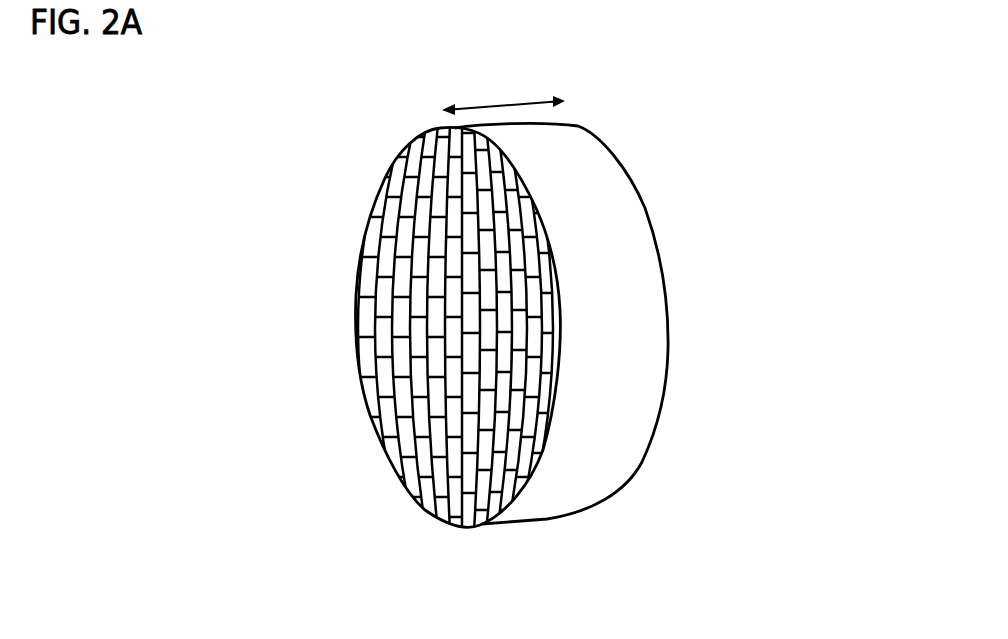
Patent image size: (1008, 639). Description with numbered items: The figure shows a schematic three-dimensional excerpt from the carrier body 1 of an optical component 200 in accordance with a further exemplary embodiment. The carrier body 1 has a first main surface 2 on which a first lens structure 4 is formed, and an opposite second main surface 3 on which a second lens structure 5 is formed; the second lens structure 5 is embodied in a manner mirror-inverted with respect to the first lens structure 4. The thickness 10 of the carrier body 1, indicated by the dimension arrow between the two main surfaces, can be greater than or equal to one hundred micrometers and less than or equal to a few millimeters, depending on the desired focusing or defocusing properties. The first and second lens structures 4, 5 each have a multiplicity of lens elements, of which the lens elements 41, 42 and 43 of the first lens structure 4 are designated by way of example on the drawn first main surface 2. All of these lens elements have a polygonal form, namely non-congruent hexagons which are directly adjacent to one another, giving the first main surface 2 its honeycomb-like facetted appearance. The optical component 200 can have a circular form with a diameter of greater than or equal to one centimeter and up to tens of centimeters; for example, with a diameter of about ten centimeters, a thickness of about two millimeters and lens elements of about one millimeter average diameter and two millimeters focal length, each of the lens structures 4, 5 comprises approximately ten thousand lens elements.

The optical component 200 is at (318, 72).
The thickness 10 is at (492, 108).
The carrier body 1 is at (553, 143).
The first main surface 2 is at (374, 329).
The first lens structure 4 is at (365, 384).
The second main surface 3 is at (654, 323).
The second lens structure 5 is at (668, 402).
The lens element 41 is at (415, 312).
The lens element 42 is at (420, 278).
The lens element 43 is at (422, 225).